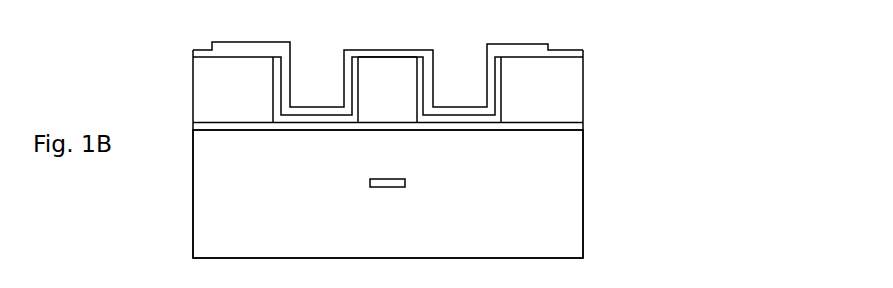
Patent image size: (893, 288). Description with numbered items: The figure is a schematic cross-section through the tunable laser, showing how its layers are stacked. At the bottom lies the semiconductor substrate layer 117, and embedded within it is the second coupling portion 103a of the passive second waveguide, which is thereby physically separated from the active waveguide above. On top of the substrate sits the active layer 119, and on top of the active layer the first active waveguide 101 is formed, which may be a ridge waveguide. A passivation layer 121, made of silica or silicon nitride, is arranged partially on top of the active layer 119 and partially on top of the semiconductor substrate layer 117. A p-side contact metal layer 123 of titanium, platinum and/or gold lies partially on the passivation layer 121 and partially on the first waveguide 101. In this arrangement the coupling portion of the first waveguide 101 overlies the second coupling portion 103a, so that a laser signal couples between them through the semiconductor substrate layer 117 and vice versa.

The first active waveguide 101 is at (406, 103).
The second coupling portion 103a is at (405, 183).
The semiconductor substrate layer 117 is at (296, 193).
The active layer 119 is at (583, 127).
The passivation layer 121 is at (583, 54).
The p-side contact metal layer 123 is at (212, 46).